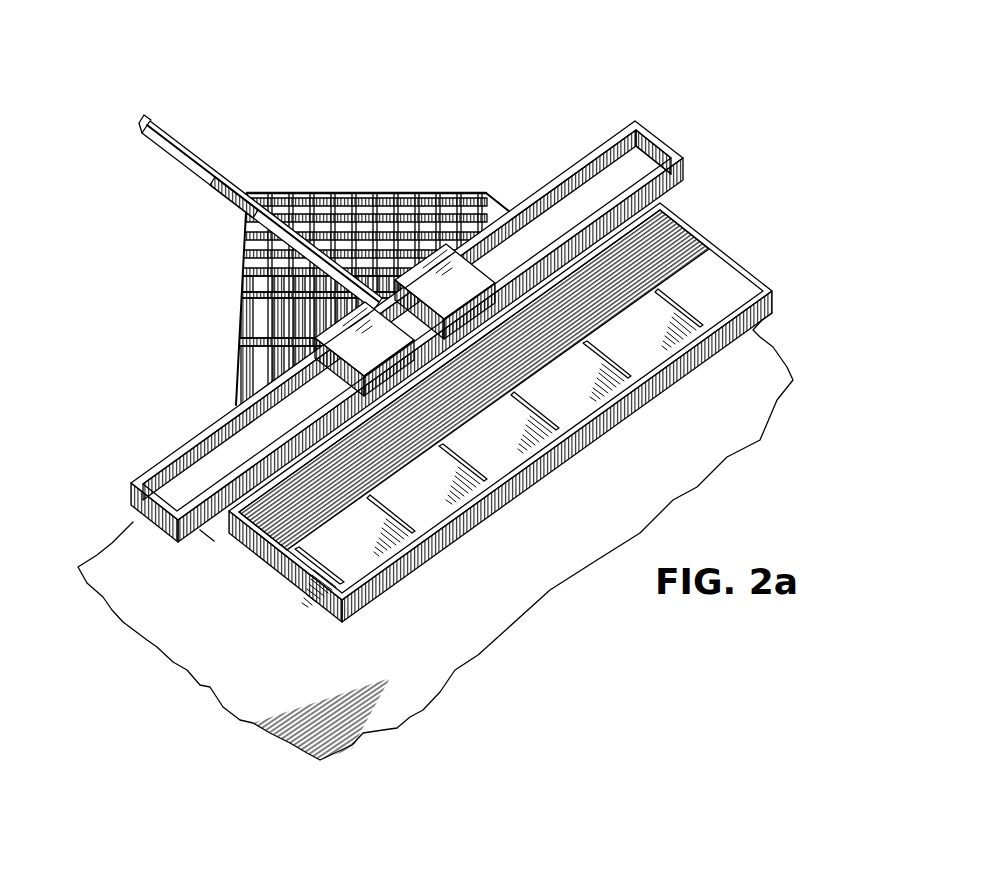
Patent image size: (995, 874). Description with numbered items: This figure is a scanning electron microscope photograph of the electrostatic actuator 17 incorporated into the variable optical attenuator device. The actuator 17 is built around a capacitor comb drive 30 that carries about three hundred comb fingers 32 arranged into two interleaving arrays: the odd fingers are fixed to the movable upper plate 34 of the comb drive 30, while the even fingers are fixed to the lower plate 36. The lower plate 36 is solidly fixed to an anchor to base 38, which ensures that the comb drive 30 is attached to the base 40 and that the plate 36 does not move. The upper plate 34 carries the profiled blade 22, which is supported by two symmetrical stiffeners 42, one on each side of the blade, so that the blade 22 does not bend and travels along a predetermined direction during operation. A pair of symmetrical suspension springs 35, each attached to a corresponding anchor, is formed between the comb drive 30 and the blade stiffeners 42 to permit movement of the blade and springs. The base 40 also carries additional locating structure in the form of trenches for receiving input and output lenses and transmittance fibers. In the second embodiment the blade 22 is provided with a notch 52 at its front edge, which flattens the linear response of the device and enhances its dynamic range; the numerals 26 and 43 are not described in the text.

The actuator 17 is at (673, 58).
The profiled blade 22 is at (170, 126).
The connector housing 26 is at (577, 873).
The capacitor comb drive 30 is at (680, 201).
The comb fingers 32 is at (665, 240).
The movable upper plate 34 is at (257, 483).
The suspension springs 35 is at (595, 180).
The lower plate 36 is at (392, 483).
The anchor to base 38 is at (577, 390).
The base 40 is at (612, 509).
The stiffeners 42 is at (355, 232).
The alignment block 43 is at (373, 332).
The notch 52 is at (143, 133).